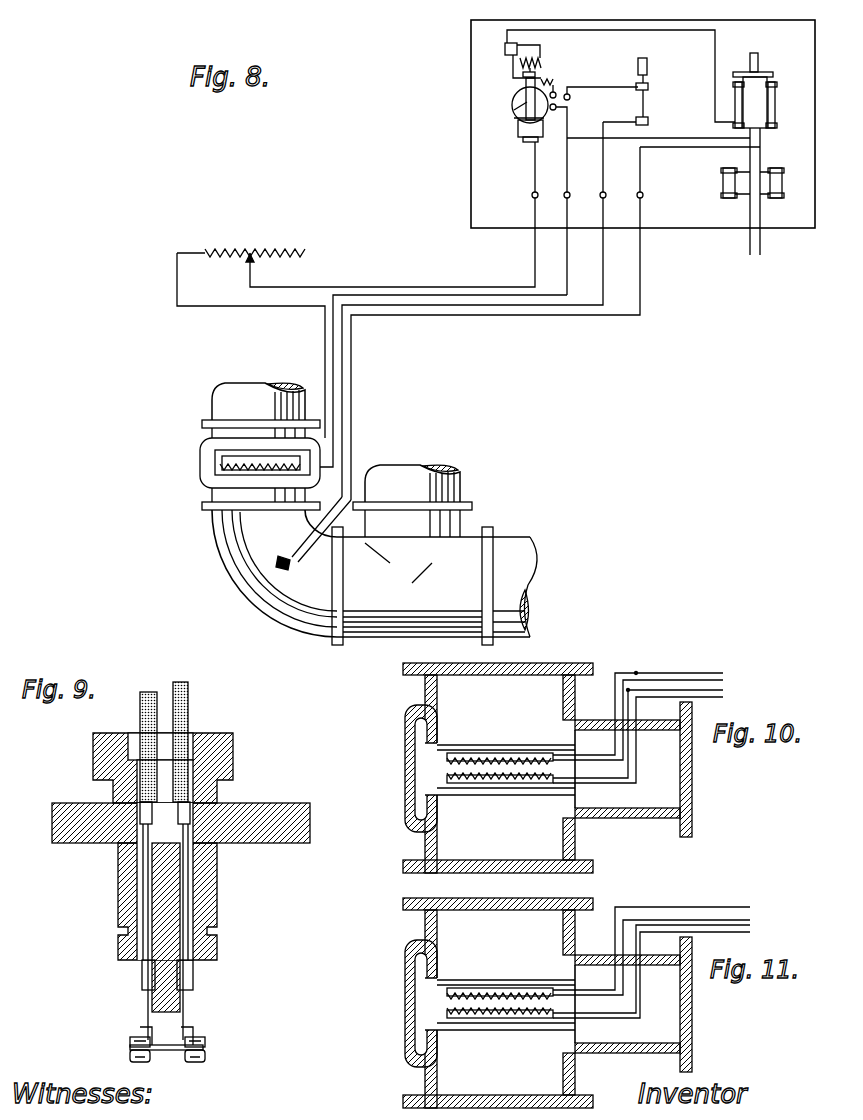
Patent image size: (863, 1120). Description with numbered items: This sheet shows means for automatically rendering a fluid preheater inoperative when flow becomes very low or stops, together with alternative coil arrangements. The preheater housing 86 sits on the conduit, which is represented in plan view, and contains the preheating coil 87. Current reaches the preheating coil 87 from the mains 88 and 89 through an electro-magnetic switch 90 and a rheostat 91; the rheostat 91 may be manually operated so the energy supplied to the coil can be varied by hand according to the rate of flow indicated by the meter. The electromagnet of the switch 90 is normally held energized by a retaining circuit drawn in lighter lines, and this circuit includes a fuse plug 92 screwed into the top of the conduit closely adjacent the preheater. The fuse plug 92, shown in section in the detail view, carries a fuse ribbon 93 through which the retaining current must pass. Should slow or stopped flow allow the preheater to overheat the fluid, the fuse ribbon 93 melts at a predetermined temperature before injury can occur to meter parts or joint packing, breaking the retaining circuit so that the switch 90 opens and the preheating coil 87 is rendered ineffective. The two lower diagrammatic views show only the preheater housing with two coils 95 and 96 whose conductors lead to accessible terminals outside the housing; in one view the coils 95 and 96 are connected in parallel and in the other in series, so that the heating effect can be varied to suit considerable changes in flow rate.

In FIG. 8, the housing of the preheater 86 is at (205, 485).
In FIG. 8, the preheating coil 87 is at (215, 465).
In FIG. 8, the main 88 is at (748, 247).
In FIG. 8, the main 89 is at (762, 247).
In FIG. 8, the electro-magnetic switch 90 is at (526, 107).
In FIG. 8, the rheostat 91 is at (248, 242).
In FIG. 8, the fuse plug 92 is at (275, 567).
In FIG. 9, the fuse plug 92 is at (233, 737).
In FIG. 9, the fuse ribbon 93 is at (172, 1052).
In FIG. 10, the coil 95 is at (447, 752).
In FIG. 11, the coil 95 is at (556, 953).
In FIG. 10, the coil 96 is at (447, 782).
In FIG. 11, the coil 96 is at (556, 977).